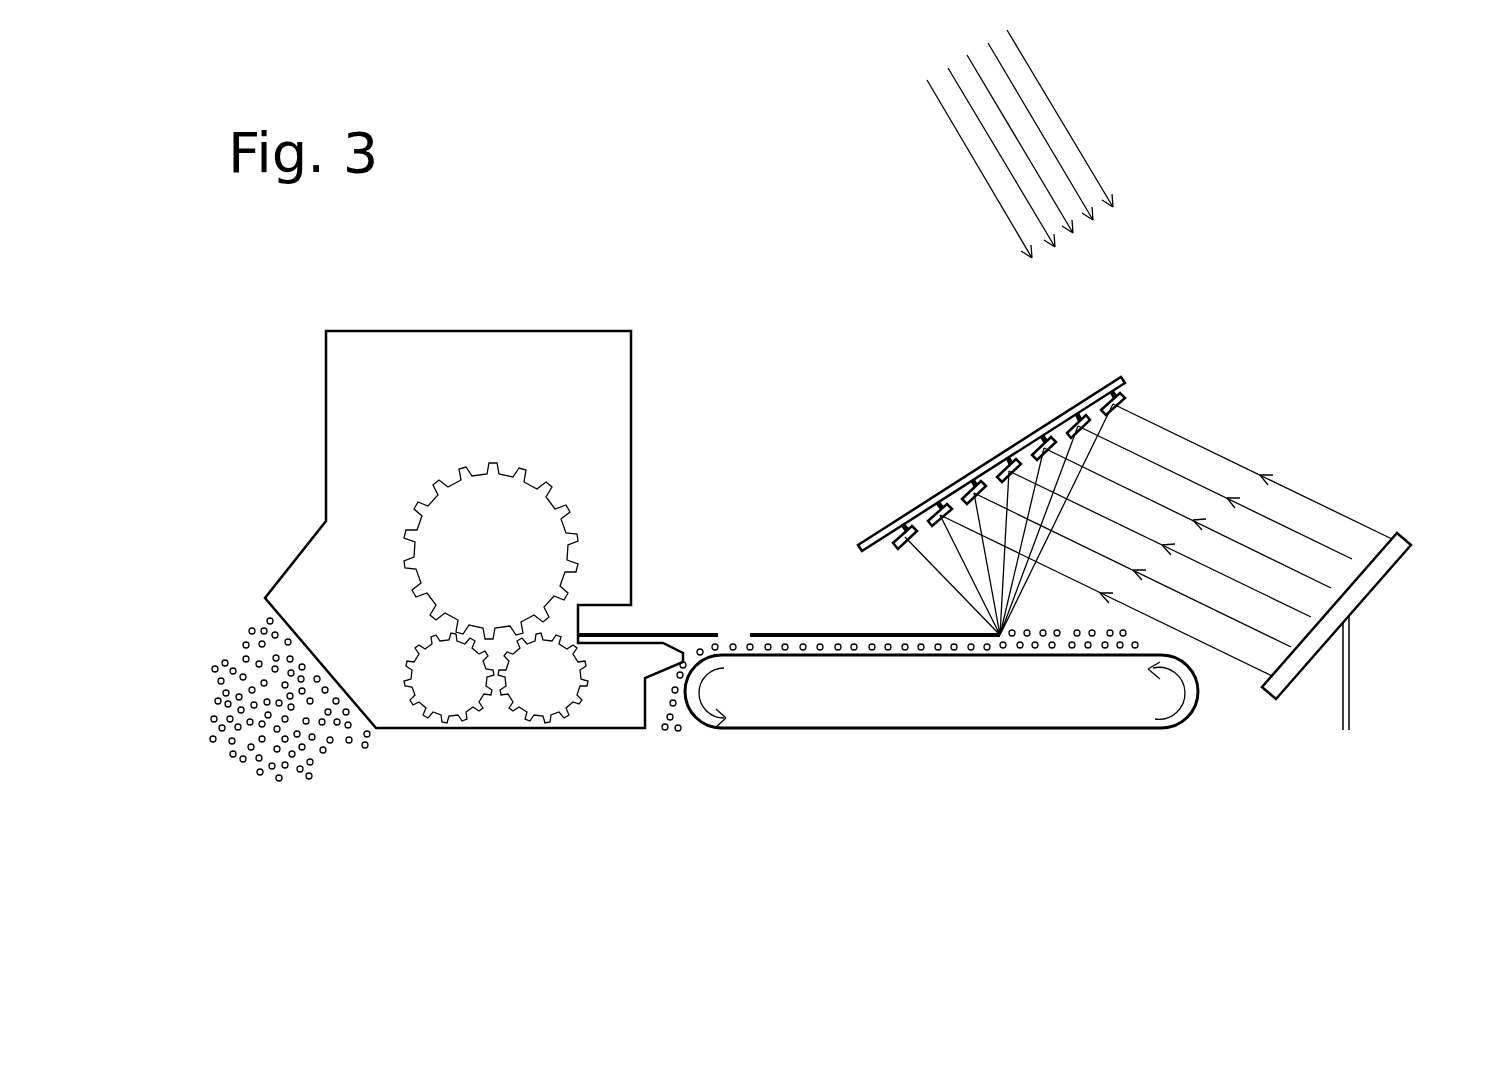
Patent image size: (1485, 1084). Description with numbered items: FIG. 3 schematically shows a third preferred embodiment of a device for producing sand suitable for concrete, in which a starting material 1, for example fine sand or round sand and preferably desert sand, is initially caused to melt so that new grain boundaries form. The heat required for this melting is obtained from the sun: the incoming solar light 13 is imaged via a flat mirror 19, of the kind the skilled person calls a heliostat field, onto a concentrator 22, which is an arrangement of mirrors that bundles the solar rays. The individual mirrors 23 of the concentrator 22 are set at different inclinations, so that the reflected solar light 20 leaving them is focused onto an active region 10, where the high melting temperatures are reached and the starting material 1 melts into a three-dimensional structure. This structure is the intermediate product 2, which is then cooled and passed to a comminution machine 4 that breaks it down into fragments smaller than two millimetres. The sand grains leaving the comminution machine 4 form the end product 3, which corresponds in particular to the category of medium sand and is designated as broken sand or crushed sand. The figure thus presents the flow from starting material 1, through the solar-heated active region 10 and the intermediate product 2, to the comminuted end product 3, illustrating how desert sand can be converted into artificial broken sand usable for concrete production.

The starting material 1 is at (1140, 635).
The intermediate product 2 is at (873, 634).
The end product 3 is at (242, 690).
The comminution machine 4 is at (527, 381).
The active region 10 is at (1000, 637).
The solar light 13 is at (1055, 130).
The flat mirror 19 is at (1387, 558).
The reflected solar light 20 is at (1328, 512).
The concentrator 22 is at (990, 458).
The individual mirrors 23 is at (1123, 400).